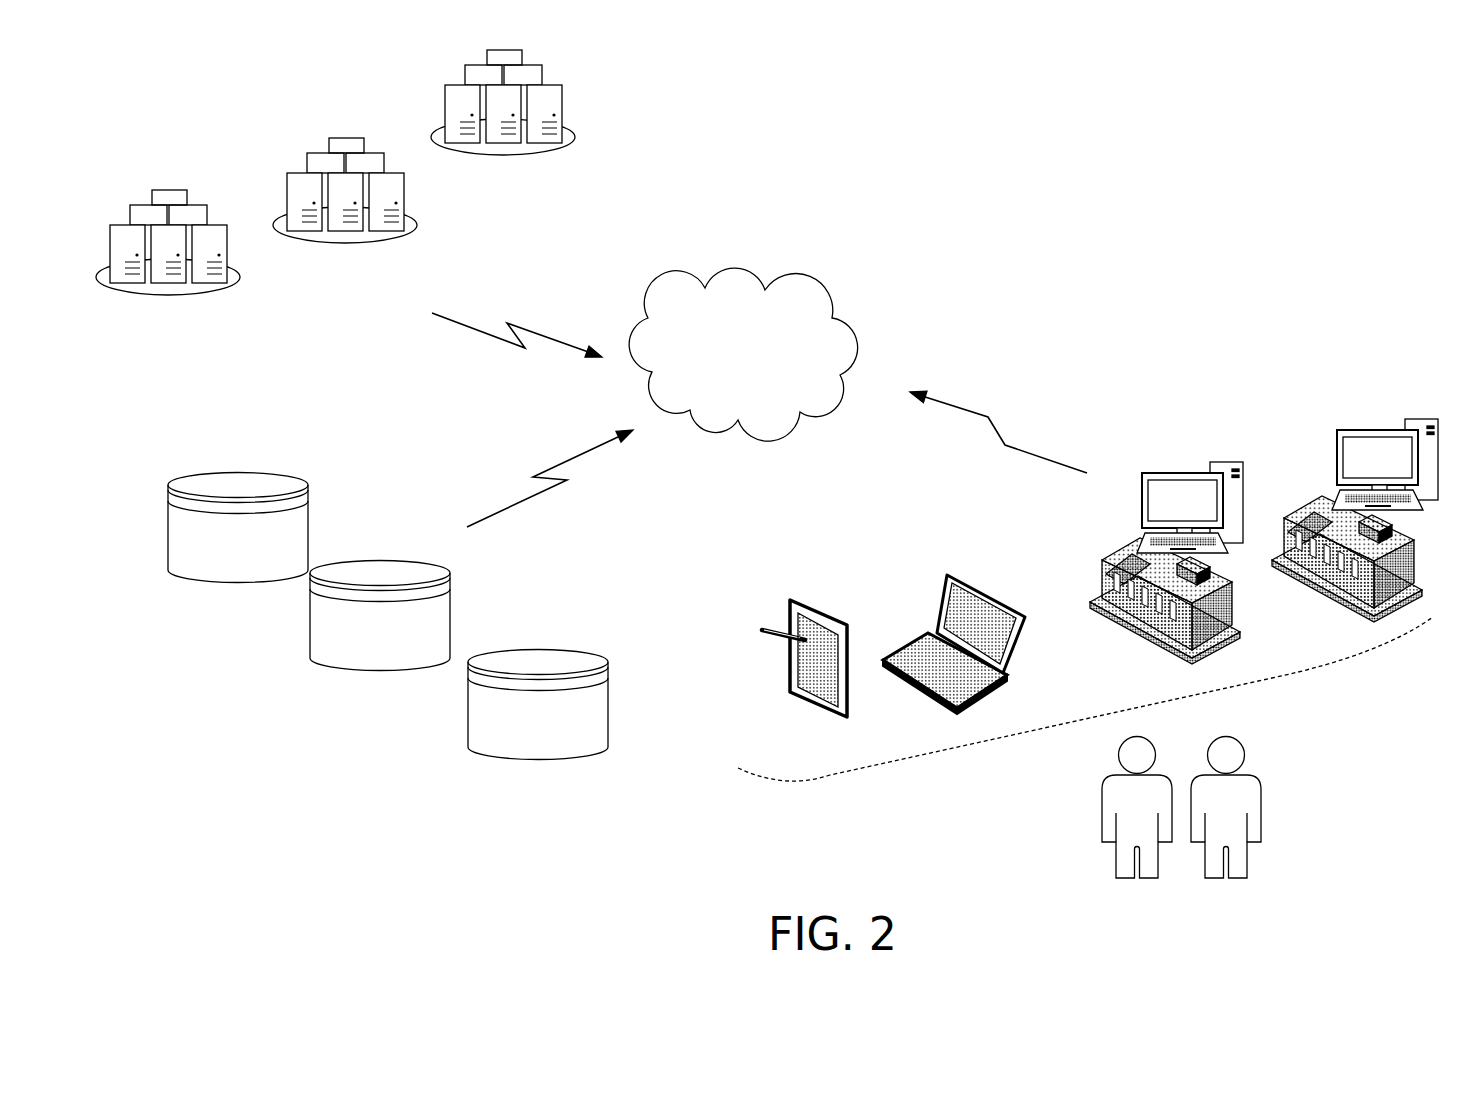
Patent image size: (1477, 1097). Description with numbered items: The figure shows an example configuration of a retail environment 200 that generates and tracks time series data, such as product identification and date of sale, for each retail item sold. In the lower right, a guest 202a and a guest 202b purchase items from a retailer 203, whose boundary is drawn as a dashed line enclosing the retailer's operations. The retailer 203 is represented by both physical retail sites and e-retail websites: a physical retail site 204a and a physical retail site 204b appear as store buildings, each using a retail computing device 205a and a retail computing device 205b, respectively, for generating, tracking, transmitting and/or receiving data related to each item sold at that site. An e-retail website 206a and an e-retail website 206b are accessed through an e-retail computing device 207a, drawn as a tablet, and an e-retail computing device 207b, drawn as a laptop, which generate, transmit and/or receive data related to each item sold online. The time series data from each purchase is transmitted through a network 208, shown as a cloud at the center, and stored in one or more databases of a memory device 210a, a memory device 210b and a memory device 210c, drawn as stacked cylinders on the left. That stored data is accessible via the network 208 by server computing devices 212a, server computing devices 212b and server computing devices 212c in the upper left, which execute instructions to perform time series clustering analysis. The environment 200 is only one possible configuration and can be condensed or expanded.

The retail environment 200 is at (1021, 161).
The guest 202a is at (1102, 808).
The guest 202b is at (1260, 808).
The retailer 203 is at (1293, 675).
The physical retail site 204a is at (1135, 632).
The physical retail site 204b is at (1330, 605).
The retail computing device 205a is at (1162, 473).
The retail computing device 205b is at (1373, 412).
The e-retail website 206a is at (822, 667).
The e-retail website 206b is at (962, 613).
The e-retail computing device 207a is at (812, 710).
The e-retail computing device 207b is at (938, 707).
The network 208 is at (743, 354).
The memory device 210a is at (238, 528).
The memory device 210b is at (380, 616).
The memory device 210c is at (538, 705).
The server computing devices 212a is at (202, 297).
The server computing devices 212b is at (377, 243).
The server computing devices 212c is at (523, 157).